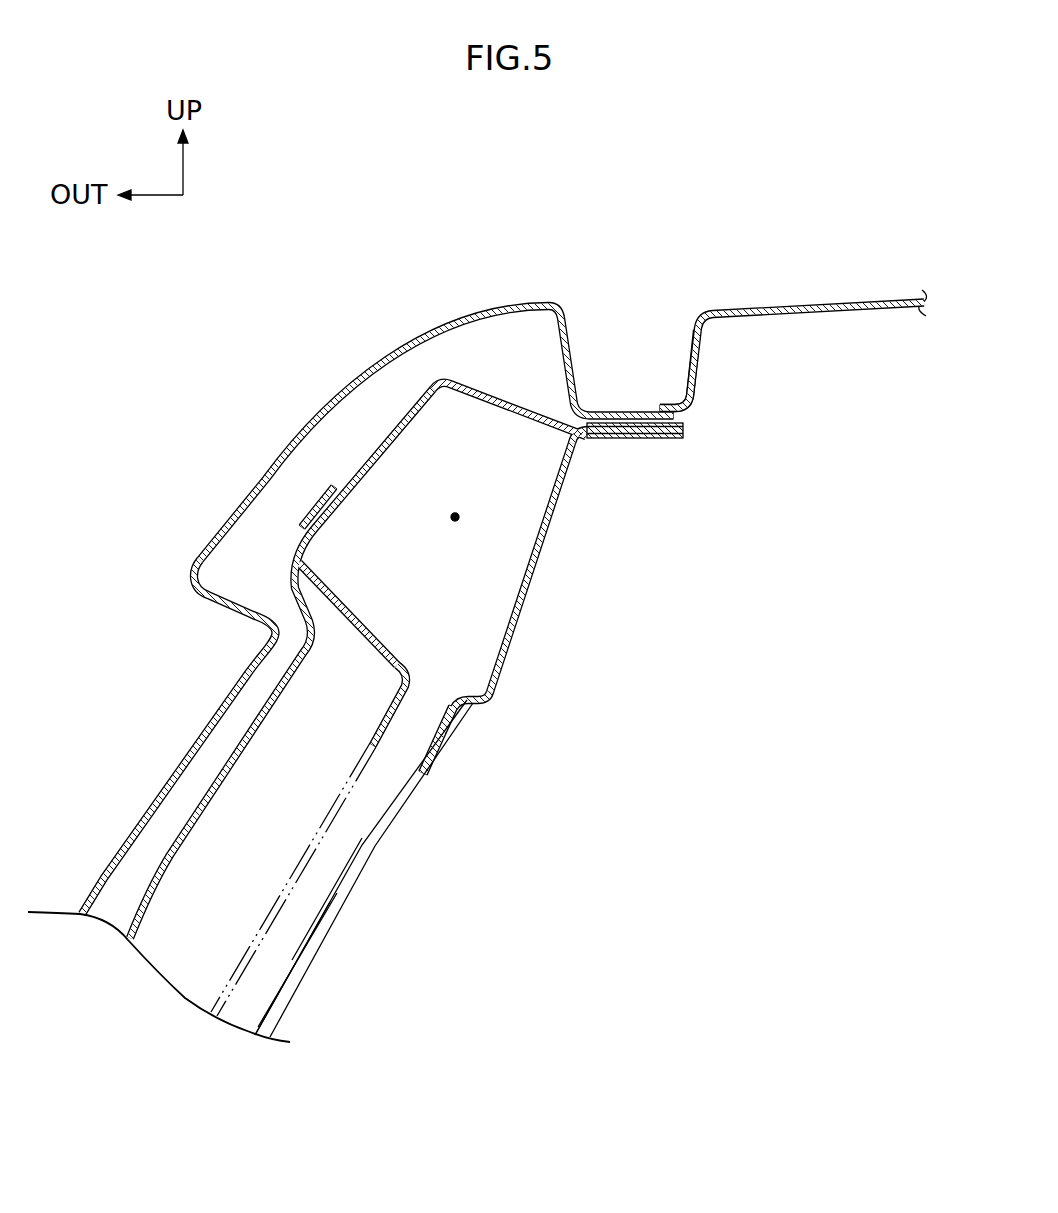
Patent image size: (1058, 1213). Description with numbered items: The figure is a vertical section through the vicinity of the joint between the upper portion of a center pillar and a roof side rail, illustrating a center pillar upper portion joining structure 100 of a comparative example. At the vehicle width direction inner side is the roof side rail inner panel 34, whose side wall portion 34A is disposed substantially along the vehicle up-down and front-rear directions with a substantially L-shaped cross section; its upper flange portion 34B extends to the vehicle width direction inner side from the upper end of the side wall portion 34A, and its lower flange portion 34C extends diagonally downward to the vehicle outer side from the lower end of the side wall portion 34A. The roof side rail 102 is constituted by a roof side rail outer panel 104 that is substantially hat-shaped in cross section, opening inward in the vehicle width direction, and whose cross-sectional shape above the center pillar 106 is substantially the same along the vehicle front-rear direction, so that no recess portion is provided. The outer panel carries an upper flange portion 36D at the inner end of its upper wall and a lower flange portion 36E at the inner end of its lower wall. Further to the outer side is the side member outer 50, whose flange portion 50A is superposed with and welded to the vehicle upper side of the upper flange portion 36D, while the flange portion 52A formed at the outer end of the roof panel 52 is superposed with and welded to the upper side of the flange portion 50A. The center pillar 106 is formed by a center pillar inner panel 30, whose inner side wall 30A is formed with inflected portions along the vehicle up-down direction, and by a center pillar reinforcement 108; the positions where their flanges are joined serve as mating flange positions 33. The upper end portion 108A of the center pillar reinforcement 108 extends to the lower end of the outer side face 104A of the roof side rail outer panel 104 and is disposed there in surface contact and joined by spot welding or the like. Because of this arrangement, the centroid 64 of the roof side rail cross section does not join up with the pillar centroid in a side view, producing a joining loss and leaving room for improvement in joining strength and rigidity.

The center pillar inner panel 30 is at (313, 950).
The inner side wall 30A is at (292, 988).
The mating flange positions 33 is at (293, 872).
The roof side rail inner panel 34 is at (571, 569).
The side wall portion 34A is at (535, 587).
The upper flange portion 34B is at (644, 440).
The lower flange portion 34C is at (448, 745).
The upper flange portion 36D is at (680, 424).
The lower flange portion 36E is at (390, 705).
The side member outer 50 is at (273, 452).
The flange portion 50A is at (629, 412).
The roof panel 52 is at (837, 300).
The flange portion 52A is at (658, 410).
The centroid 64 is at (454, 512).
The center pillar upper portion joining structure 100 is at (210, 482).
The roof side rail 102 is at (572, 538).
The roof side rail outer panel 104 is at (494, 392).
The outer side face 104A is at (383, 443).
The center pillar 106 is at (352, 917).
The center pillar reinforcement 108 is at (187, 803).
The upper end portion 108A is at (307, 530).